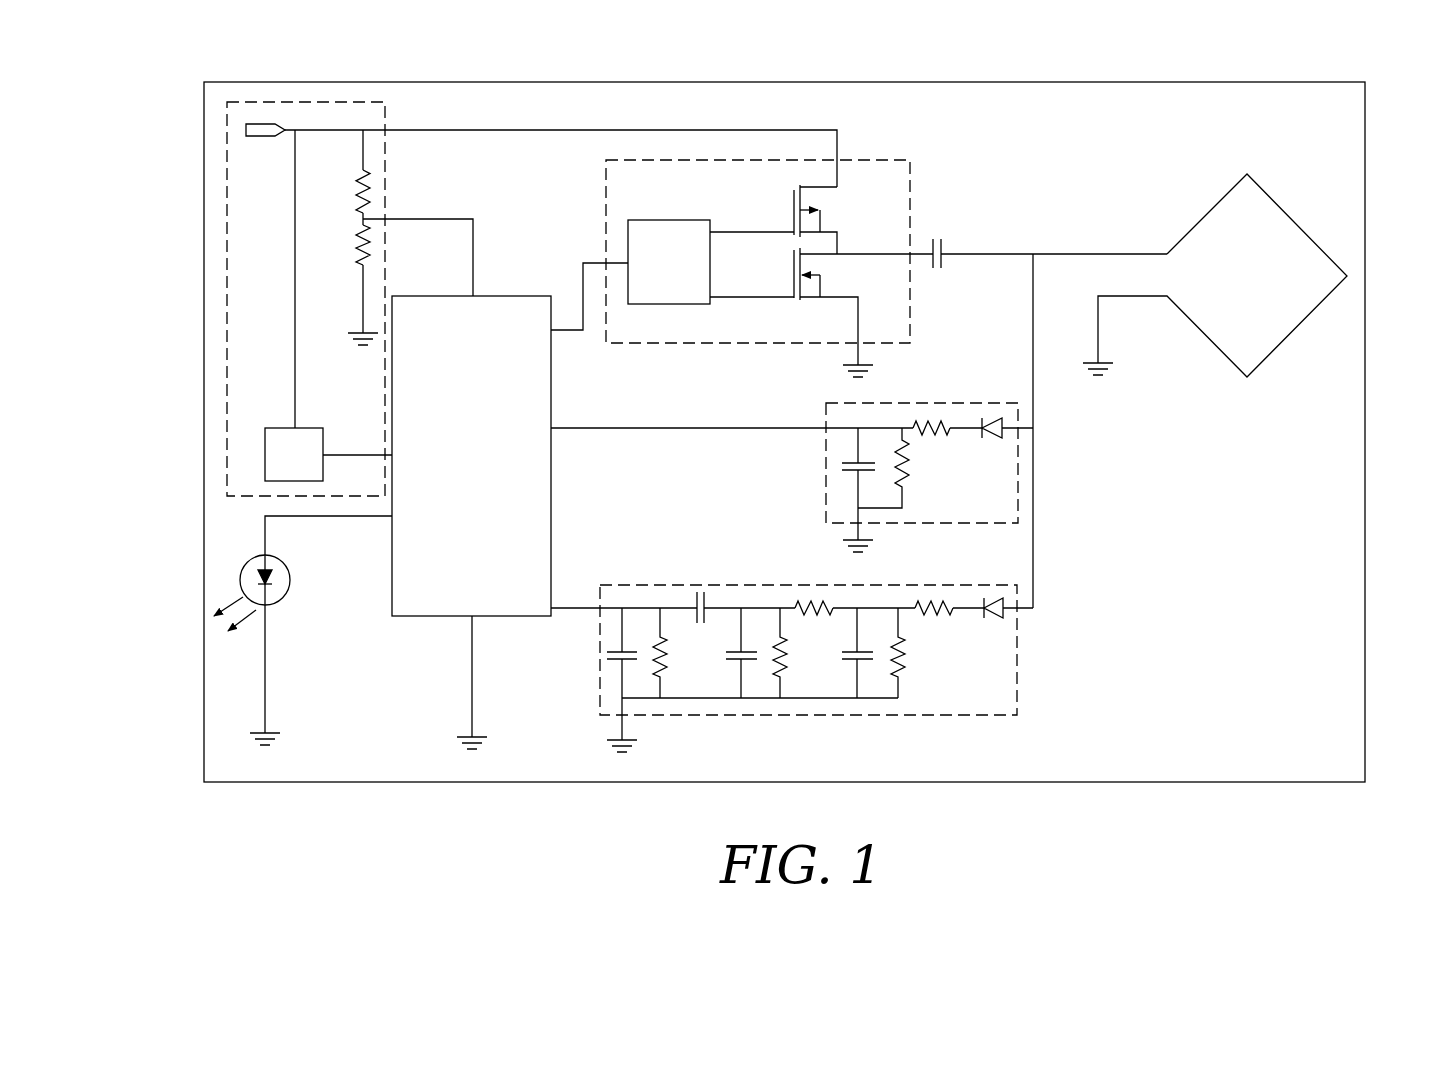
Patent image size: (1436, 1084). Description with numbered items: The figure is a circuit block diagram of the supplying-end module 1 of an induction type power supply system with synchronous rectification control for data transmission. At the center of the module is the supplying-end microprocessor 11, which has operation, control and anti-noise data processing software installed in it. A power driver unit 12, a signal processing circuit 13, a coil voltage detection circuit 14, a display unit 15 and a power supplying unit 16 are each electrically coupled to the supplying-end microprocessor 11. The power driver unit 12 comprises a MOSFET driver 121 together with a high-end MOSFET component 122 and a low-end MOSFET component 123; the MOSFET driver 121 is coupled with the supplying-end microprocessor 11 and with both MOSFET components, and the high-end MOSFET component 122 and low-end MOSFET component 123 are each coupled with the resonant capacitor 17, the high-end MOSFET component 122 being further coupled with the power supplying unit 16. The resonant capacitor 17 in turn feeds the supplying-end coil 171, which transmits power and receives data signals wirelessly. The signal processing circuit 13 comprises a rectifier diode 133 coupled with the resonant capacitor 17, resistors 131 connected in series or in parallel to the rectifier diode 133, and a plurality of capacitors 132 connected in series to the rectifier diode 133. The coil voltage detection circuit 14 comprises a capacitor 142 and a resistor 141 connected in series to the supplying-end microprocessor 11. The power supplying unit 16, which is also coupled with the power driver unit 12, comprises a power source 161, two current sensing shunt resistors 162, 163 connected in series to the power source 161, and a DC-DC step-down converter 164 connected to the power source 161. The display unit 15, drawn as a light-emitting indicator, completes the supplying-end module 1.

The supplying-end module 1 is at (1338, 742).
The supplying-end microprocessor 11 is at (535, 512).
The power driver unit 12 is at (905, 170).
The MOSFET driver 121 is at (670, 230).
The high-end MOSFET component 122 is at (823, 210).
The low-end MOSFET component 123 is at (823, 277).
The signal processing circuit 13 is at (1017, 697).
The resistors 131 is at (812, 618).
The capacitors 132 is at (732, 662).
The rectifier diode 133 is at (1006, 612).
The coil voltage detection circuit 14 is at (1018, 512).
The resistor 141 is at (942, 432).
The capacitor 142 is at (852, 474).
The display unit 15 is at (290, 580).
The power supplying unit 16 is at (252, 347).
The power source 161 is at (258, 137).
The current sensing shunt resistor 162 is at (356, 176).
The current sensing shunt resistor 163 is at (356, 246).
The DC-DC step-down converter 164 is at (280, 463).
The resonant capacitor 17 is at (942, 268).
The supplying-end coil 171 is at (1288, 334).